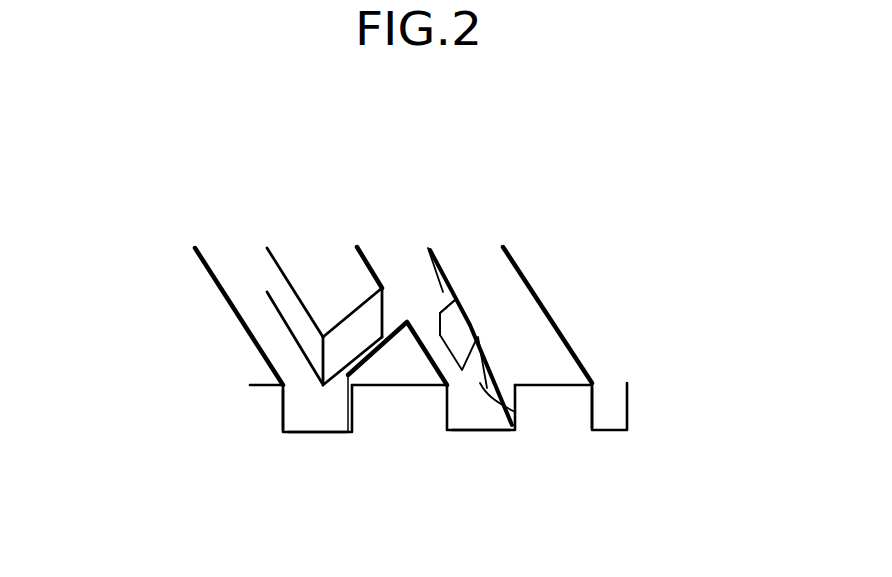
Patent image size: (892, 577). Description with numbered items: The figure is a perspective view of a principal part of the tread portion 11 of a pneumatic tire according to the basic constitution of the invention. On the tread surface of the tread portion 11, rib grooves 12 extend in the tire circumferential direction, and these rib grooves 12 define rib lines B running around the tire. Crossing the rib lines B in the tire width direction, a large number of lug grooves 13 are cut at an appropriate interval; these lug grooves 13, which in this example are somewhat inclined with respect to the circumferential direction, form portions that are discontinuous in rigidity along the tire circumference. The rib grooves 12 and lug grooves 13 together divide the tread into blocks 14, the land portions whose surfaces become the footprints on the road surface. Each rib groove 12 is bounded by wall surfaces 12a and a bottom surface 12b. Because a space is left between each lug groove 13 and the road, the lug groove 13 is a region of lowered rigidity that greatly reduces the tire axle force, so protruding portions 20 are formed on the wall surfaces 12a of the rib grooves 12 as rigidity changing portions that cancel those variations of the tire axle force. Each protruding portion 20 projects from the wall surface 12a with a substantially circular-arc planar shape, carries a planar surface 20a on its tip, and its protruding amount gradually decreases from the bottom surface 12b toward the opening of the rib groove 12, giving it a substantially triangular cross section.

The tread portion 11 is at (515, 232).
The rib groove 12 is at (308, 410).
The wall surface 12a is at (440, 313).
The bottom surface 12b is at (250, 300).
The lug groove 13 is at (338, 345).
The block 14 is at (293, 262).
The protruding portion 20 is at (478, 403).
The planar surface 20a is at (440, 313).
The rib line B is at (178, 304).